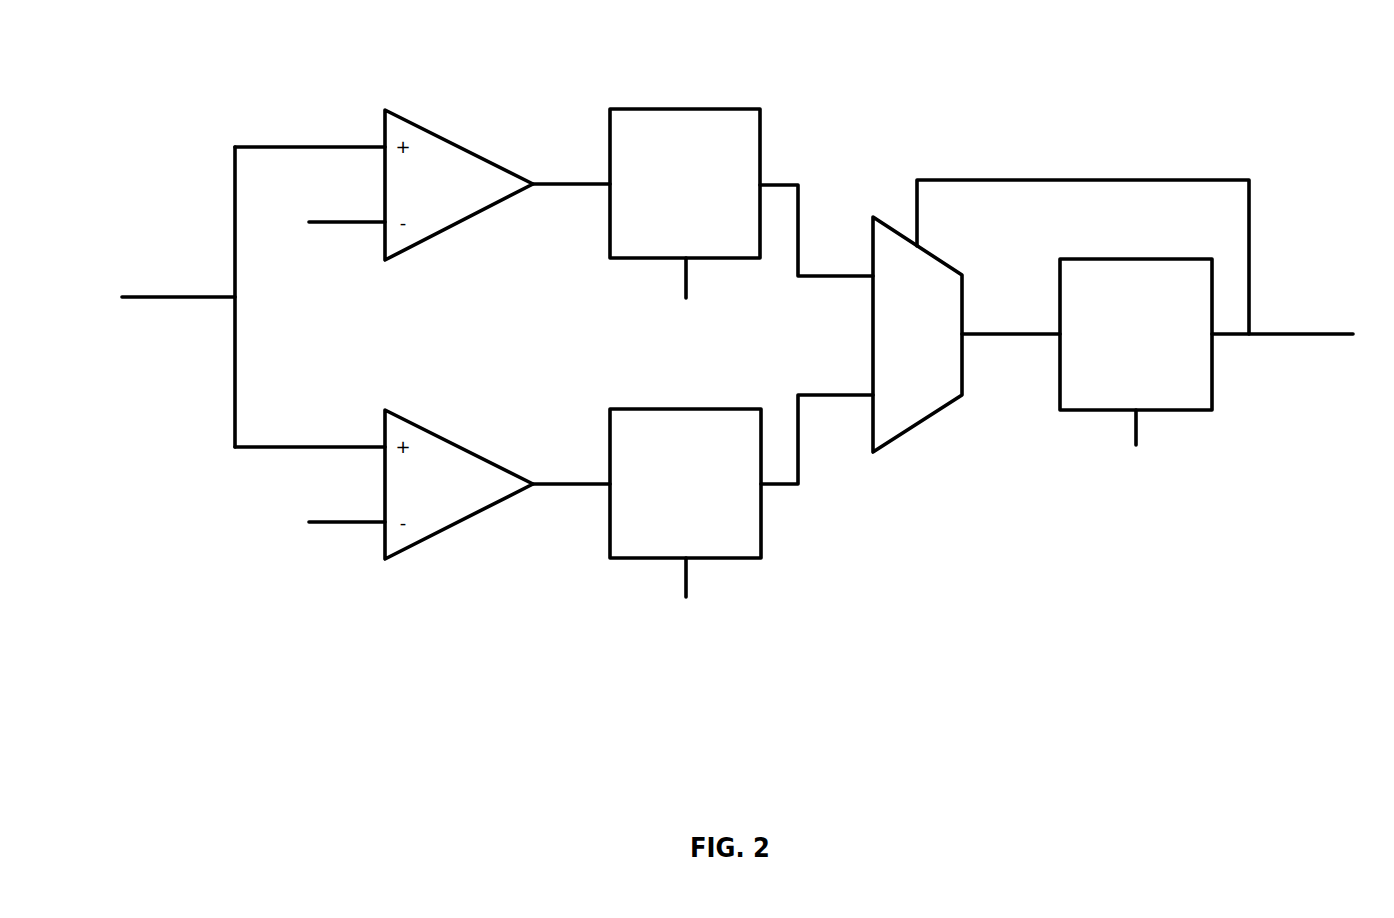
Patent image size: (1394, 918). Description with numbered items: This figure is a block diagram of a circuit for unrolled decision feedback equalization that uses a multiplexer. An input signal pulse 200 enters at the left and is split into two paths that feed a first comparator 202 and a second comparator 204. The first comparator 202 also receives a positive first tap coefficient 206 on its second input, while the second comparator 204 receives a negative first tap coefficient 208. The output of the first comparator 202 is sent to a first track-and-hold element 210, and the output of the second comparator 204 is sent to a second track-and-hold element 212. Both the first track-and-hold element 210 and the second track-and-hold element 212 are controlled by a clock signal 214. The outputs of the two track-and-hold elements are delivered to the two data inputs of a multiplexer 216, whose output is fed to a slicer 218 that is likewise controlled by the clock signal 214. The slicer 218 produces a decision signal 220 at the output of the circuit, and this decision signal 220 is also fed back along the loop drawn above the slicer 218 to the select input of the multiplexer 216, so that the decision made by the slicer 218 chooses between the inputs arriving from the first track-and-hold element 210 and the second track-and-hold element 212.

The input signal pulse 200 is at (177, 297).
The first comparator 202 is at (398, 117).
The second comparator 204 is at (398, 417).
The positive first tap coefficient 206 is at (350, 222).
The negative first tap coefficient 208 is at (350, 522).
The first track-and-hold element 210 is at (677, 108).
The second track-and-hold element 212 is at (675, 409).
The clock signal 214 is at (683, 282).
The multiplexer 216 is at (922, 423).
The slicer 218 is at (1193, 410).
The decision signal 220 is at (1302, 334).